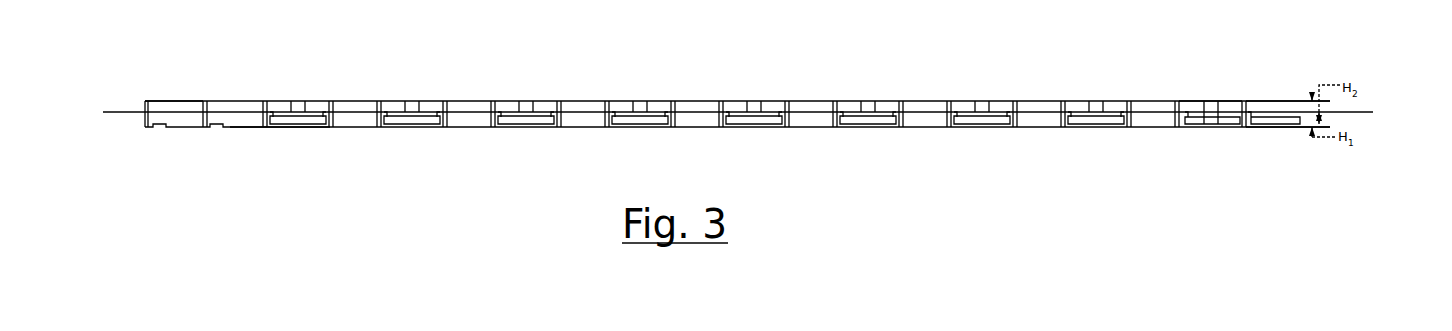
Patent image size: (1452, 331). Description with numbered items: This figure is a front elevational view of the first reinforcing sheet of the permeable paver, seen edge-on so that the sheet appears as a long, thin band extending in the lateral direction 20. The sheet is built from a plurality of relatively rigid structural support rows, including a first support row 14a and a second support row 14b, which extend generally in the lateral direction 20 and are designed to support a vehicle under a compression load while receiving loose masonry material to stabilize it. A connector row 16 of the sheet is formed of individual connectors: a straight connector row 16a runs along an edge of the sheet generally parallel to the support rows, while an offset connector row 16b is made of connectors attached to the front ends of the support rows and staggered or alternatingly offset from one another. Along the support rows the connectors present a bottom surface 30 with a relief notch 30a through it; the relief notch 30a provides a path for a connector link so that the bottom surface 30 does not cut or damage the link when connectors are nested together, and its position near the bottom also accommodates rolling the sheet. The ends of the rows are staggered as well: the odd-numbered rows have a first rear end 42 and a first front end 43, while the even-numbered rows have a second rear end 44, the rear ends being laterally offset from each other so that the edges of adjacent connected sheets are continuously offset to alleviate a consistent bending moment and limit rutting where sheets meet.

The first support row 14a is at (1298, 93).
The second support row 14b is at (140, 101).
The connector row 16 is at (1172, 142).
The straight connector row 16a is at (250, 140).
The offset connector row 16b is at (1253, 85).
The lateral direction 20 is at (1373, 112).
The bottom surface 30 is at (252, 130).
The relief notch 30a is at (212, 129).
The first rear end 42 is at (207, 100).
The first front end 43 is at (1240, 100).
The second rear end 44 is at (150, 100).